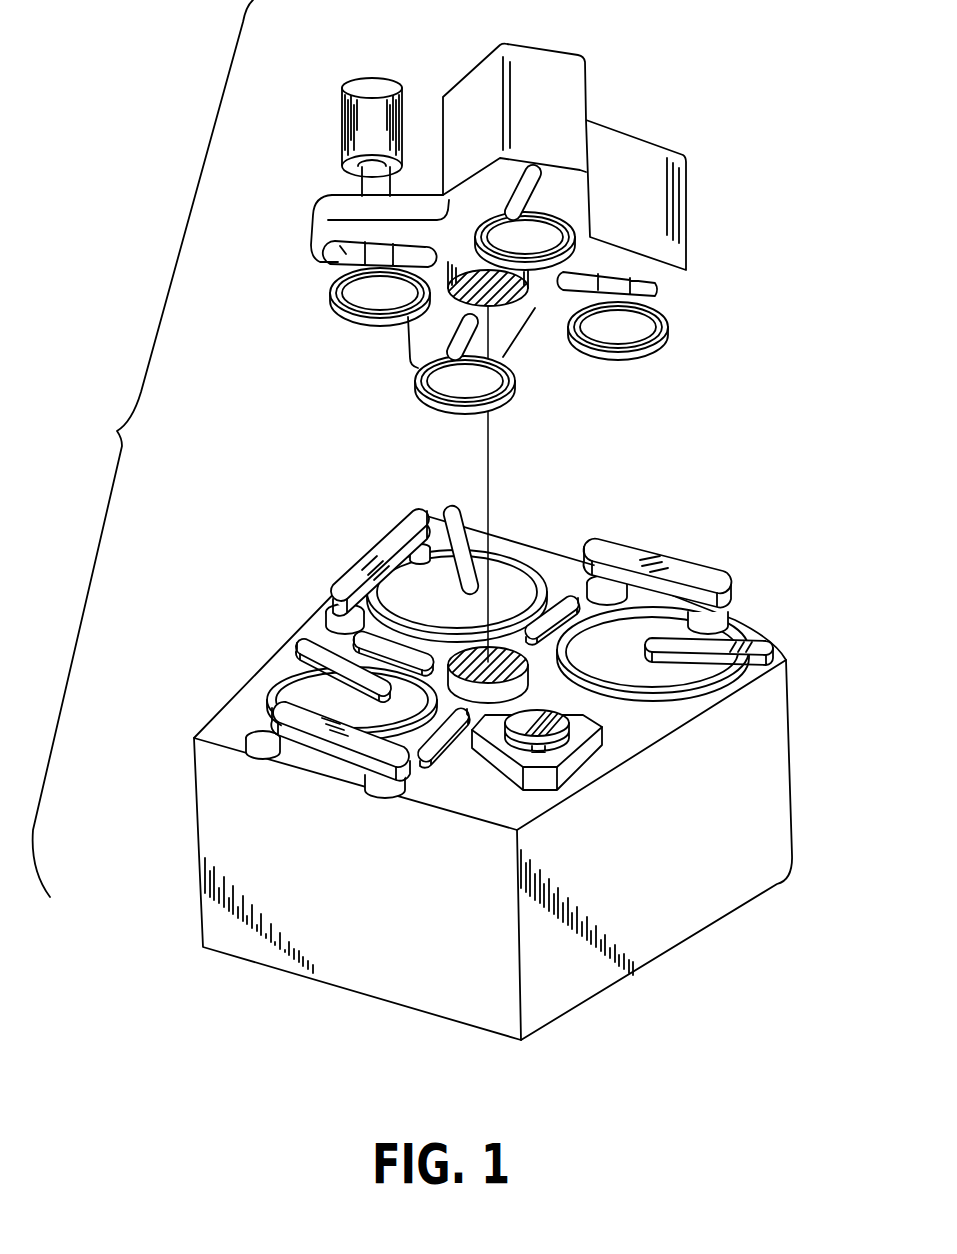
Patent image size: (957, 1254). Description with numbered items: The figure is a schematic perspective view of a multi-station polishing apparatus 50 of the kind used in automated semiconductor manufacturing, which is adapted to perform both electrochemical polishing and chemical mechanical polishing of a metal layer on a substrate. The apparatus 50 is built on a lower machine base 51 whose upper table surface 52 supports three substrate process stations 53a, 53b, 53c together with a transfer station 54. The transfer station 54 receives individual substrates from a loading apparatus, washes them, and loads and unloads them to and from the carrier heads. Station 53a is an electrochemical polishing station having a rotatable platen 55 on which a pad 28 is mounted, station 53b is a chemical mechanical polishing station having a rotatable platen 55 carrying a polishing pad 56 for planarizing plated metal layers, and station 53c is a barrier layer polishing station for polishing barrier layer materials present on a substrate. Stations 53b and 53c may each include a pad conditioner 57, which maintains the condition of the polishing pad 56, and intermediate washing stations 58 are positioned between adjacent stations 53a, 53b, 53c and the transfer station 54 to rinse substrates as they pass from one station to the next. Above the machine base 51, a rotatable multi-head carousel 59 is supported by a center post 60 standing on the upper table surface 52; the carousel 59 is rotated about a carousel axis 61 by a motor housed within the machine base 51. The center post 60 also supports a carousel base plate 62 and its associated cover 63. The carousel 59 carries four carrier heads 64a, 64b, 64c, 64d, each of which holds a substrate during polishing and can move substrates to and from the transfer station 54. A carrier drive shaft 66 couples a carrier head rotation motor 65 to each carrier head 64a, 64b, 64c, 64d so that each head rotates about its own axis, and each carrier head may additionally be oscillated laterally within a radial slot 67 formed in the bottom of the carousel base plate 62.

The pad 28 is at (631, 664).
The apparatus 50 is at (108, 442).
The lower machine base 51 is at (217, 834).
The upper table surface 52 is at (227, 724).
The substrate processing station 53a is at (642, 710).
The substrate process station 53b is at (508, 552).
The barrier layer polishing station 53c is at (283, 667).
The transfer station 54 is at (572, 772).
The rotatable platen 55 is at (717, 680).
The polishing pad 56 is at (439, 616).
The pad conditioner 57 is at (703, 570).
The intermediate washing station 58 is at (553, 597).
The rotatable multi-head carousel 59 is at (647, 114).
The center post 60 is at (502, 692).
The carousel axis 61 is at (490, 427).
The carousel base plate 62 is at (536, 308).
The cover 63 is at (659, 215).
The carrier head 64a is at (672, 330).
The carrier head 64b is at (558, 206).
The carrier head 64c is at (337, 319).
The carrier head 64d is at (415, 401).
The carrier head rotation motor 65 is at (372, 88).
The carrier drive shaft 66 is at (358, 186).
The radial slot 67 is at (337, 253).